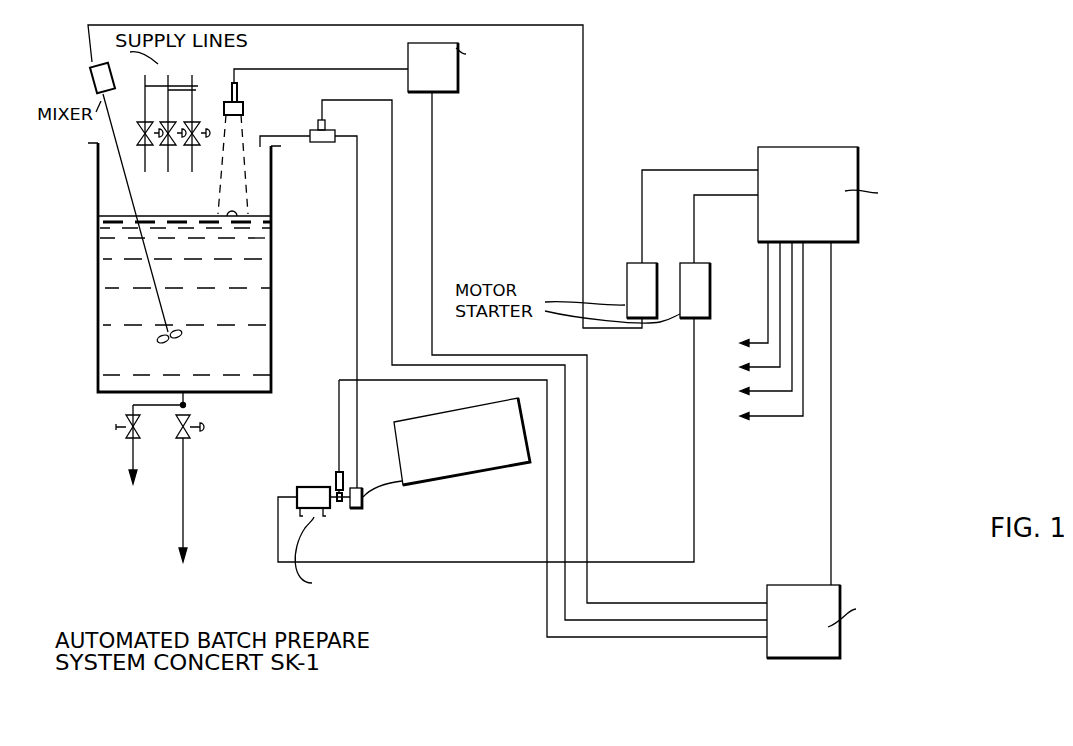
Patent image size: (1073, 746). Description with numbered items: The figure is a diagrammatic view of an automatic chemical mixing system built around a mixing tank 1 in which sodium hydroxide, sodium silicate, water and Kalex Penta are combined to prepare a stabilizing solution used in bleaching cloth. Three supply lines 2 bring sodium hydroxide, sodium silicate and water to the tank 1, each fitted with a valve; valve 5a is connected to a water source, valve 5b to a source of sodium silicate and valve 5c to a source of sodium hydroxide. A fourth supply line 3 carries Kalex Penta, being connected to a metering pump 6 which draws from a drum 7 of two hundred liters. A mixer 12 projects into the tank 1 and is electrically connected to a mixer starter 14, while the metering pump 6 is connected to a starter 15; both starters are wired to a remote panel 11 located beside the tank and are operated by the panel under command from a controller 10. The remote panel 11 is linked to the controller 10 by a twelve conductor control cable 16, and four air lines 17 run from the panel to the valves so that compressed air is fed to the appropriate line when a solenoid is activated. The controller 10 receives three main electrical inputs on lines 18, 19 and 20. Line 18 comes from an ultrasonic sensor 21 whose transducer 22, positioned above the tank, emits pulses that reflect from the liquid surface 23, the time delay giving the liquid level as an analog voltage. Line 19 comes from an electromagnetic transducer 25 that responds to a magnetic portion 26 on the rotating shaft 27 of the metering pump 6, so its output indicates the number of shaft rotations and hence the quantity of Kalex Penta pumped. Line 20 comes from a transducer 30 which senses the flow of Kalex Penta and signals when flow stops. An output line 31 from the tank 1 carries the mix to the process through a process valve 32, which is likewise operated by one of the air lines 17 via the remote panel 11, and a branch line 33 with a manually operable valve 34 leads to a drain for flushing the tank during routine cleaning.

The mixing tank 1 is at (97, 335).
The supply lines 2 is at (193, 89).
The fourth supply line 3 is at (290, 136).
The valve 5a is at (142, 148).
The valve 5b is at (165, 148).
The valve 5c is at (189, 148).
The metering pump 6 is at (363, 503).
The 200 liter drum 7 is at (503, 461).
The controller 10 is at (824, 645).
The remote panel 11 is at (857, 241).
The mixer 12 is at (128, 188).
The mixer starter 14 is at (630, 278).
The starter 15 is at (706, 278).
The 12 conductor control cable 16 is at (832, 333).
The air lines 17 is at (745, 391).
The line 18 is at (706, 603).
The line 19 is at (734, 638).
The line 20 is at (715, 619).
The ultrasonic sensor 21 is at (446, 86).
The transducer 22 is at (237, 95).
The surface 23 is at (236, 218).
The electromagnetic transducer 25 is at (336, 476).
The magnetic portion 26 is at (328, 487).
The rotating shaft 27 is at (342, 501).
The transducer 30 is at (327, 143).
The output line 31 is at (186, 398).
The process valve 32 is at (190, 432).
The branch line 33 is at (140, 403).
The manually operable valve 34 is at (126, 432).